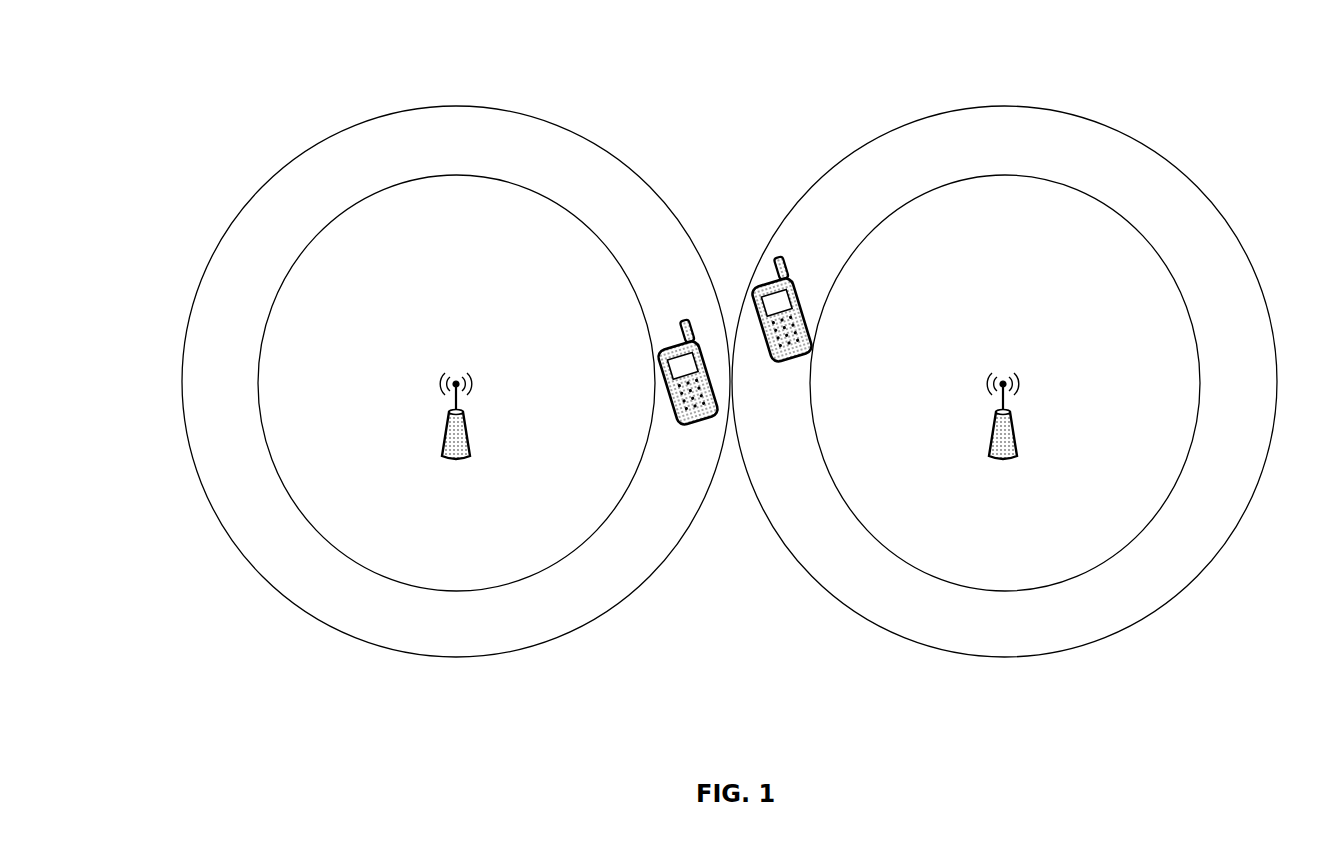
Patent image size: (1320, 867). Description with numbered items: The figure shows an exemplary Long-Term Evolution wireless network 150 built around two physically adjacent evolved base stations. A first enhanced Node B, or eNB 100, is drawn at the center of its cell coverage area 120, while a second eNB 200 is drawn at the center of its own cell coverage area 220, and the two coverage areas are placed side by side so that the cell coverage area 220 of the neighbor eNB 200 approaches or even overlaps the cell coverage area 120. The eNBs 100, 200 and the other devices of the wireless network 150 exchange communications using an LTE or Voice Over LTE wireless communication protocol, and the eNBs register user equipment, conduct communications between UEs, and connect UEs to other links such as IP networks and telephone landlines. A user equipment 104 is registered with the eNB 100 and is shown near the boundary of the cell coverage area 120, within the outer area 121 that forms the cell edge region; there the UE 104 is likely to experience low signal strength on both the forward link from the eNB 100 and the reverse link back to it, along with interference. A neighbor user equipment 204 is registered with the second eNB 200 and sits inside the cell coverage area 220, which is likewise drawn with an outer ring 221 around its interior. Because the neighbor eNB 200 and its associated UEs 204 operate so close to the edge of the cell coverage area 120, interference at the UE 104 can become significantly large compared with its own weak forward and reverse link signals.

The first enhanced Node B (eNB) 100 is at (446, 441).
The user equipment (UE) 104 is at (660, 385).
The cell coverage area 120 is at (542, 120).
The outer area 121 is at (337, 165).
The LTE wireless network 150 is at (335, 693).
The second eNB 200 is at (1014, 440).
The user equipment (UE) 204 is at (808, 322).
The cell coverage area 220 is at (1097, 122).
The inner coverage area of second cell 221 is at (877, 162).